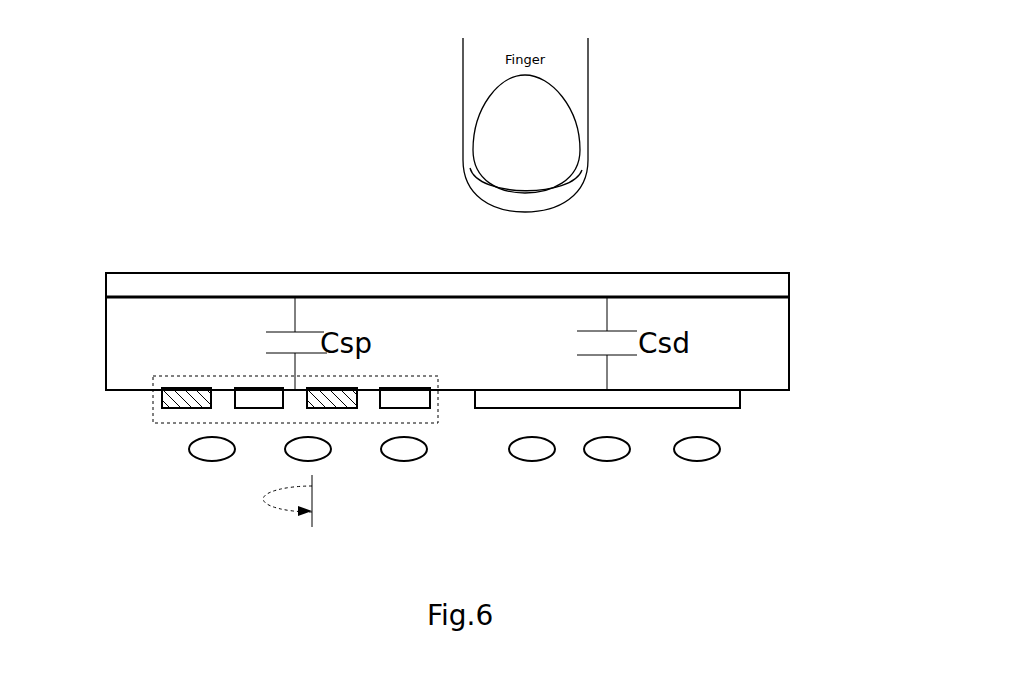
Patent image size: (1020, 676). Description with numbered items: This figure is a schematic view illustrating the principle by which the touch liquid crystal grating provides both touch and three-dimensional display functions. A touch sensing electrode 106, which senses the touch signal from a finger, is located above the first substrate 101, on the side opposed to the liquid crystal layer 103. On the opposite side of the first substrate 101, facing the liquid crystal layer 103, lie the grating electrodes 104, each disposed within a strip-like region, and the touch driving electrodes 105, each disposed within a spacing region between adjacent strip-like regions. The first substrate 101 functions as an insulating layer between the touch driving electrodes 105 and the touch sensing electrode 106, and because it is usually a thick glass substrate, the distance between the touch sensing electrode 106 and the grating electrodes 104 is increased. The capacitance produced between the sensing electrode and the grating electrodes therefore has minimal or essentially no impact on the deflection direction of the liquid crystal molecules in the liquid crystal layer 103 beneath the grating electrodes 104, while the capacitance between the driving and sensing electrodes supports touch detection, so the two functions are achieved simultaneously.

The touch sensing electrode 106 is at (753, 273).
The first substrate 101 is at (789, 342).
The grating electrodes 104 is at (155, 423).
The touch driving electrodes 105 is at (740, 398).
The liquid crystal layer 103 is at (705, 482).